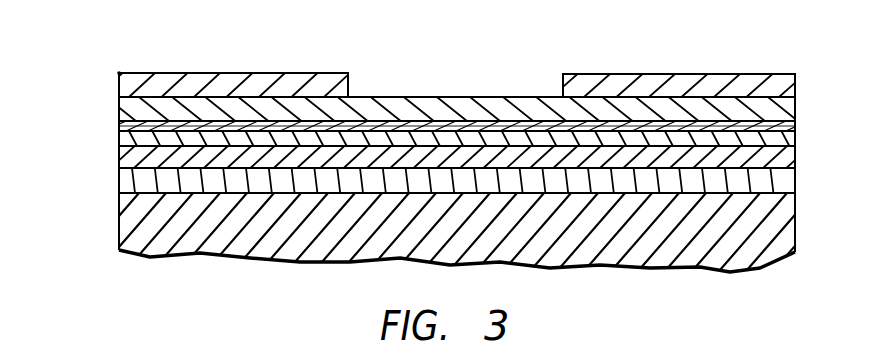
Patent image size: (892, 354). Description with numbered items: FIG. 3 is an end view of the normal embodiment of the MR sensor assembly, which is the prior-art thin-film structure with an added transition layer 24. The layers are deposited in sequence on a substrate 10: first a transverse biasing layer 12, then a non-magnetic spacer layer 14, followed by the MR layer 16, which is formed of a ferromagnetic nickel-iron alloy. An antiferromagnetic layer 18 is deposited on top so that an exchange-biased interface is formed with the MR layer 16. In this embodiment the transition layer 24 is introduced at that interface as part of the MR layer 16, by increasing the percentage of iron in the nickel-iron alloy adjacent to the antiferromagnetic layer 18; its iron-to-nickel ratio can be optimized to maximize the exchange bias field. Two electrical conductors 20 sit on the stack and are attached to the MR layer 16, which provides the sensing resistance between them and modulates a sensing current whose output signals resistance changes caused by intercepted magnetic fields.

The substrate 10 is at (128, 220).
The transverse biasing layer 12 is at (785, 184).
The non-magnetic spacer layer 14 is at (128, 153).
The MR layer 16 is at (785, 141).
The antiferromagnetic layer 18 is at (128, 105).
The electrical conductors 20 is at (248, 73).
The transition layer 24 is at (119, 127).